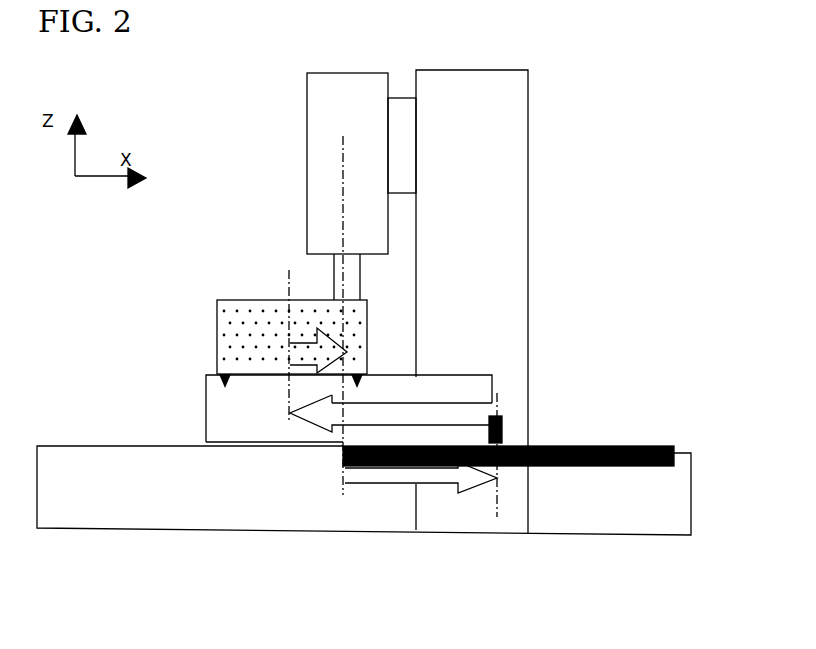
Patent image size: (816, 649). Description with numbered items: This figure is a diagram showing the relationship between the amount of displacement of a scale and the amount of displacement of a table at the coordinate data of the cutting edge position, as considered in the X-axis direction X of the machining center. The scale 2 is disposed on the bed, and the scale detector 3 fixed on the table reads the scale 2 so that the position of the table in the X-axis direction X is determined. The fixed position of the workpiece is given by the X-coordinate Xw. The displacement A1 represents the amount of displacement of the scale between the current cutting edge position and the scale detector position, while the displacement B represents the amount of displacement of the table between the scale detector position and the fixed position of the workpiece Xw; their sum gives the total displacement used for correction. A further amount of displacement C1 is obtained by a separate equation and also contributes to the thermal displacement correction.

The scale 2 is at (665, 450).
The scale detector 3 is at (502, 412).
The X-axis direction X is at (343, 300).
The X-coordinate of the fixed position of the workpiece Xw is at (290, 388).
The amount of displacement C1 is at (318, 350).
The amount of displacement of the table between the scale detector position and the B is at (391, 413).
The amount of displacement of the scale between the current cutting edge position an A1 is at (421, 489).